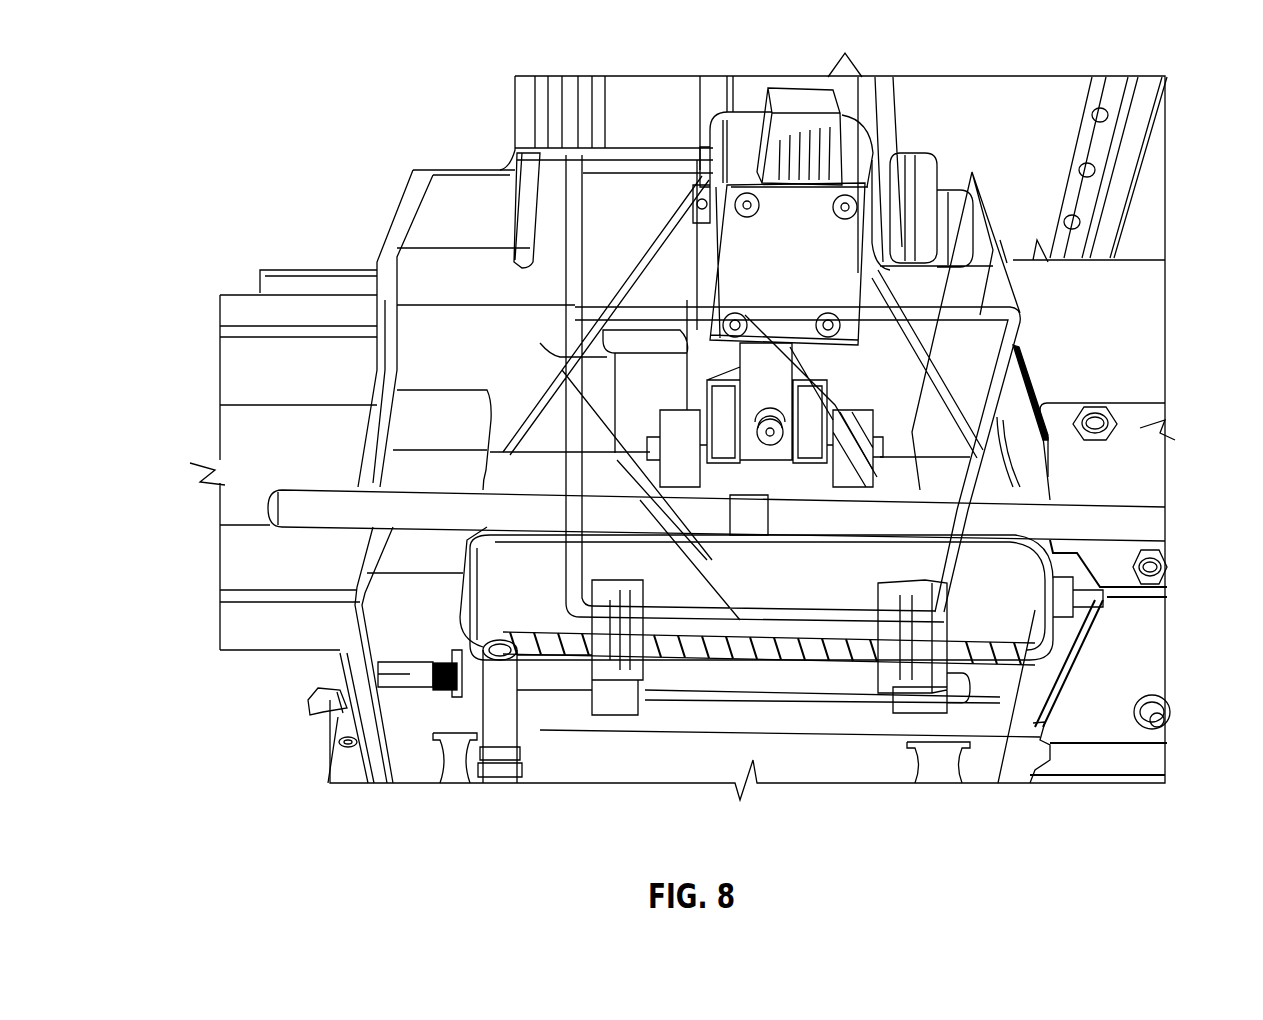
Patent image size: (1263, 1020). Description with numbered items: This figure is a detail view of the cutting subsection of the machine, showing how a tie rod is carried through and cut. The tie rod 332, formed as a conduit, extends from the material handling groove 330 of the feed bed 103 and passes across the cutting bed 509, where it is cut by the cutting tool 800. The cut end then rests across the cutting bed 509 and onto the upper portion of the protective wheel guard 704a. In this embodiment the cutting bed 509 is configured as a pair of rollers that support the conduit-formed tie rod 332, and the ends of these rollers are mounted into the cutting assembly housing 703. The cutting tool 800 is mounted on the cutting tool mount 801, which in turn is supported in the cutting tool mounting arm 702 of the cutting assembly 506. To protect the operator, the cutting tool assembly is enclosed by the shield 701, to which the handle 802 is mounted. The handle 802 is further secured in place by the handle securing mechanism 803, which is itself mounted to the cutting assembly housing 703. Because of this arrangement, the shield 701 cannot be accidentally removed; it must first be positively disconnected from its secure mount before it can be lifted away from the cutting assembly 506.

The cutting tool mounting arm 702 is at (738, 132).
The cutting tool mount 801 is at (803, 100).
The cutting assembly 506 is at (858, 162).
The feed bed 103 is at (1158, 338).
The protective wheel guard 704a is at (238, 357).
The shield 701 is at (565, 355).
The tie rod 332 is at (320, 517).
The handle securing mechanism 803 is at (495, 640).
The cutting tool 800 is at (770, 445).
The material handling groove 330 is at (1148, 550).
The handle 802 is at (610, 710).
The cutting bed 509 is at (1022, 613).
The cutting assembly housing 703 is at (997, 723).